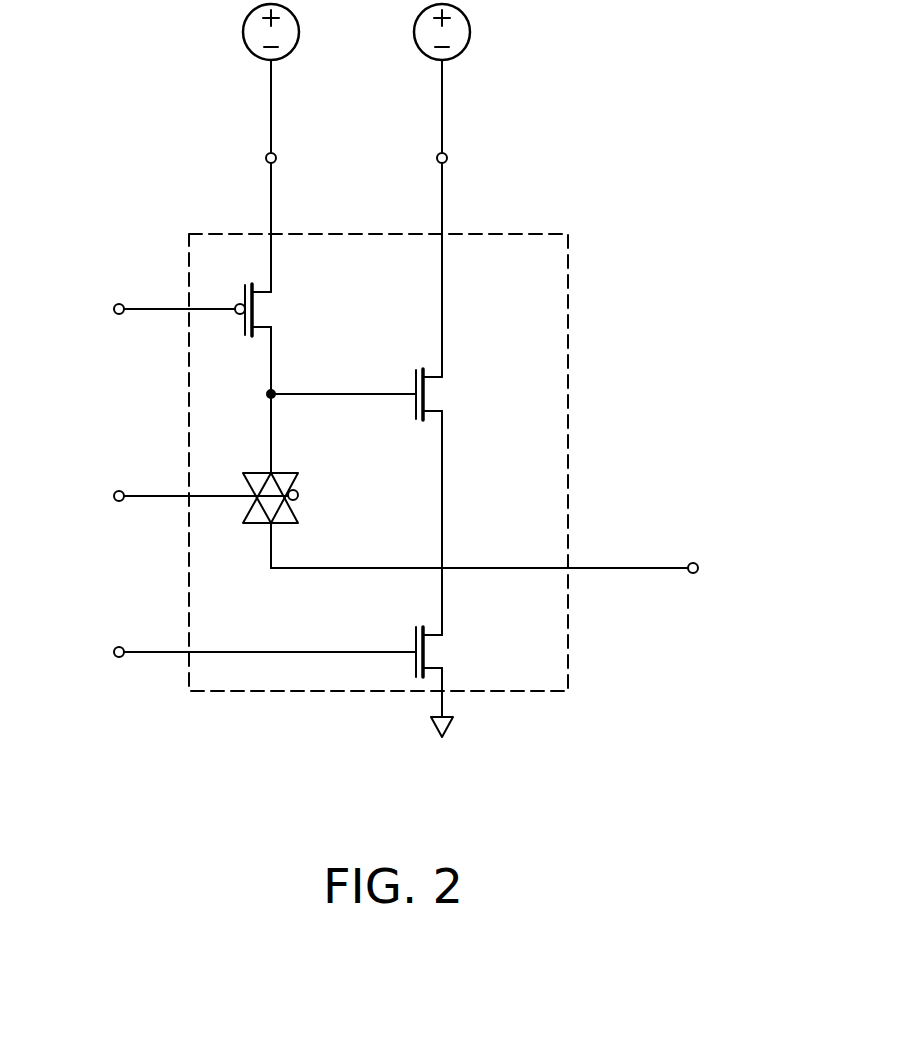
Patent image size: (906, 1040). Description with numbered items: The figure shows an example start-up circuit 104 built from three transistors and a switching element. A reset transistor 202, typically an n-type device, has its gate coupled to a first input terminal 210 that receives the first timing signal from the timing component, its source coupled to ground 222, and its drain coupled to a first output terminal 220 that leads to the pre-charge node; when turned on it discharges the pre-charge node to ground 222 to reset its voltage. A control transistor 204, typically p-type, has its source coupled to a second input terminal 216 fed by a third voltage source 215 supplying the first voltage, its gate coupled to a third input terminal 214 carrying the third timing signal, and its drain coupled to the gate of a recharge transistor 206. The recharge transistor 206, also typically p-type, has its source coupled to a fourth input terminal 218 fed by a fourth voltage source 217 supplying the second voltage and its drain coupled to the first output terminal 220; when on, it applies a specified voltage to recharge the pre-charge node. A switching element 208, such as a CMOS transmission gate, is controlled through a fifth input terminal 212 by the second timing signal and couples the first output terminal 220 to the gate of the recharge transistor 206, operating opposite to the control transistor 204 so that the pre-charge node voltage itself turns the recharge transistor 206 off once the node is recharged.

The start-up circuit 104 is at (510, 234).
The reset transistor 202 is at (442, 658).
The control transistor 204 is at (272, 313).
The recharge transistor 206 is at (442, 399).
The switching element 208 is at (290, 464).
The first input terminal 210 is at (119, 646).
The fifth input terminal 212 is at (119, 490).
The third input terminal 214 is at (119, 303).
The third voltage source 215 is at (243, 30).
The second input terminal 216 is at (265, 158).
The fourth voltage source 217 is at (414, 30).
The fourth input terminal 218 is at (436, 158).
The first output terminal 220 is at (693, 562).
The ground 222 is at (455, 731).